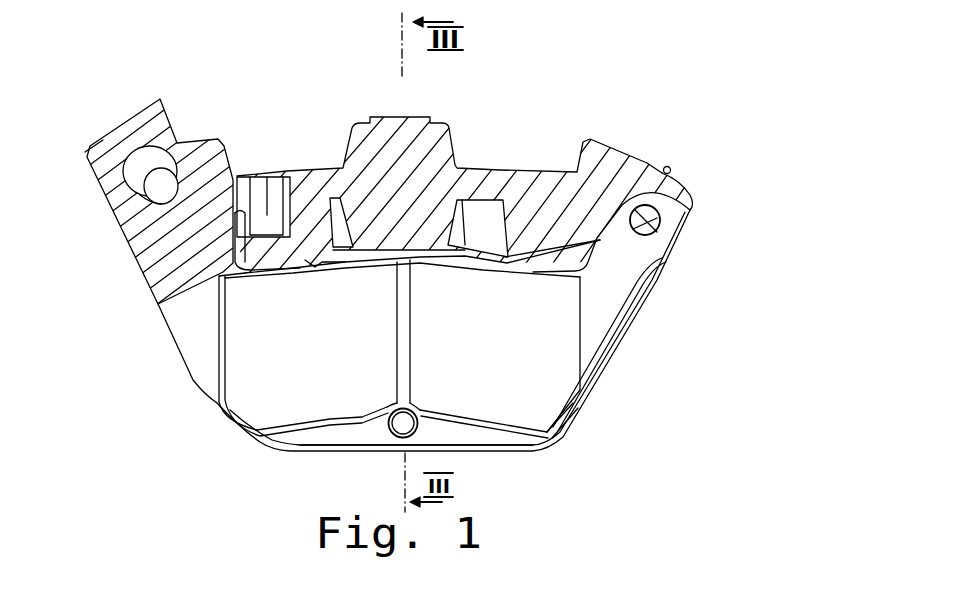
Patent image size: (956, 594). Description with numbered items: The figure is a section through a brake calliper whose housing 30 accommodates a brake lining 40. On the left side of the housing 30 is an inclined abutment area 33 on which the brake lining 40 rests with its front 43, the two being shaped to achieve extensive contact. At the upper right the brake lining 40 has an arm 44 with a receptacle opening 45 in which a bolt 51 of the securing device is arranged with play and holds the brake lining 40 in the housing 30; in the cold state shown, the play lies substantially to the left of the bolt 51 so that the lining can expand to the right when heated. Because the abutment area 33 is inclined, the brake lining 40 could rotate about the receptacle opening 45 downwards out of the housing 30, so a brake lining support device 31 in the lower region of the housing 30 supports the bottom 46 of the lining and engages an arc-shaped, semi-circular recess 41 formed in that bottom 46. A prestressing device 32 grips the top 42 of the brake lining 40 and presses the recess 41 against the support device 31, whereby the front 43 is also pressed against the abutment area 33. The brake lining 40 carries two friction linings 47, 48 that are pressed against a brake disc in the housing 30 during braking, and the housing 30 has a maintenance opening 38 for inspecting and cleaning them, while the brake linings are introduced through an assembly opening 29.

The assembly opening 29 is at (600, 387).
The housing 30 is at (623, 163).
The brake lining support device 31 is at (400, 423).
The prestressing device 32 is at (483, 270).
The abutment area 33 is at (224, 323).
The maintenance opening 38 is at (265, 197).
The brake lining 40 is at (603, 333).
The recess 41 is at (415, 415).
The top 42 is at (293, 273).
The front 43 is at (218, 360).
The arm 44 is at (634, 272).
The receptacle opening 45 is at (662, 223).
The bottom 46 is at (478, 423).
The friction lining 47 is at (345, 397).
The friction lining 48 is at (523, 365).
The bolt 51 is at (672, 174).